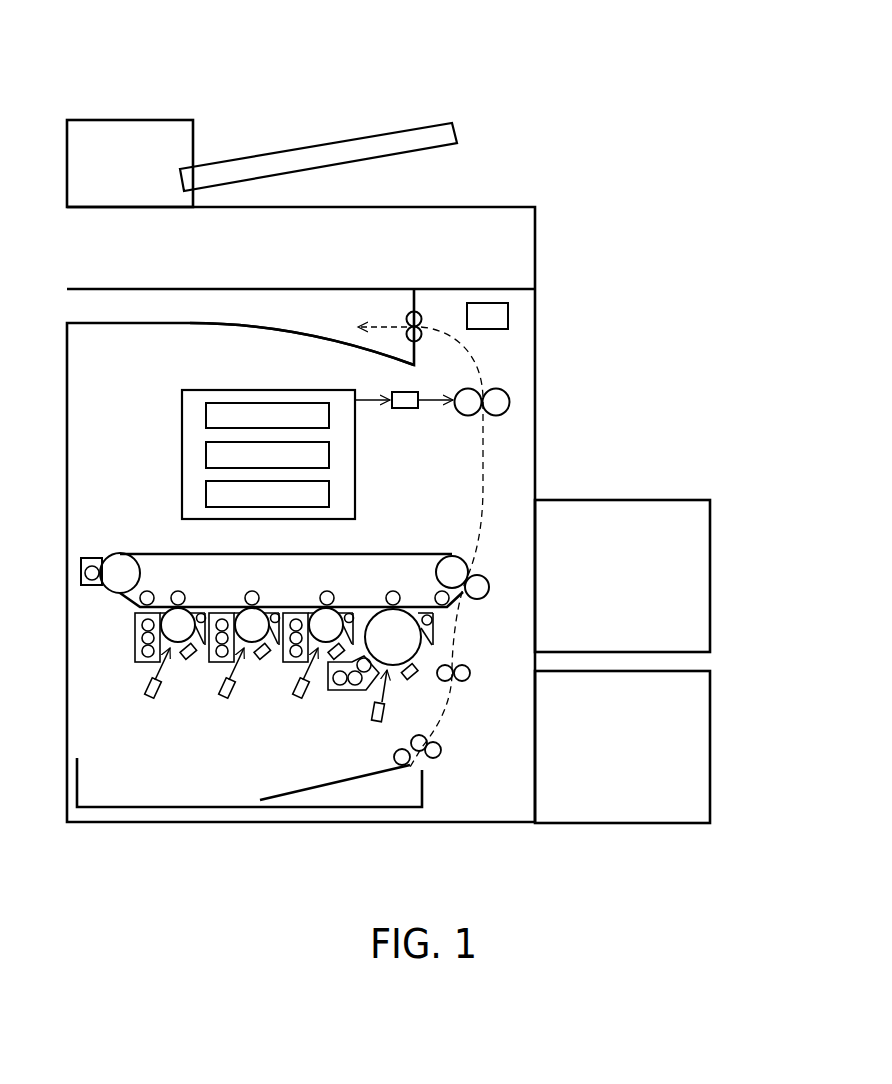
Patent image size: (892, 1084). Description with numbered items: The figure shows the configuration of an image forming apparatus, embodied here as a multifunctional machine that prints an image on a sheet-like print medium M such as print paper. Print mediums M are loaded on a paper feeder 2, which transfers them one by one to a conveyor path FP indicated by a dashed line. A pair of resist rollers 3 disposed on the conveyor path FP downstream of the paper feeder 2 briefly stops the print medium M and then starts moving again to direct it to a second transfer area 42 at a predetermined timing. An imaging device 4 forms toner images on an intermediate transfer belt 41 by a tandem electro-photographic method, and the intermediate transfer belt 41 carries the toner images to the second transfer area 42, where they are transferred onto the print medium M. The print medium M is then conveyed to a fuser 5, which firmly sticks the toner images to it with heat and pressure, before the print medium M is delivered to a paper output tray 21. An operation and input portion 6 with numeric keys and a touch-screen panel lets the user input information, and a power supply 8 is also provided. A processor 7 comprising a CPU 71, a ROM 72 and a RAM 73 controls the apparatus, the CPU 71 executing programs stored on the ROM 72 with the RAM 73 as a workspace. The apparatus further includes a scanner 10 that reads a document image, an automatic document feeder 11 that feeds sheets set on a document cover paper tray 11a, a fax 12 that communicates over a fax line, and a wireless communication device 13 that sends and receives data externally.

The scanner 10 is at (495, 207).
The automatic document feeder 11 is at (130, 120).
The document cover paper tray 11a is at (342, 138).
The paper output tray 21 is at (260, 325).
The operation and input portion 6 is at (488, 303).
The fuser 5 is at (504, 377).
The power supply 8 is at (405, 392).
The processor 7 is at (236, 433).
The CPU 71 is at (206, 416).
The ROM 72 is at (206, 455).
The RAM 73 is at (206, 493).
The imaging device 4 is at (302, 598).
The intermediate transfer belt 41 is at (388, 554).
The second transfer area 42 is at (489, 561).
The pair of resist rollers 3 is at (474, 663).
The conveyor path FP is at (445, 712).
The paper feeder 2 is at (439, 780).
The print medium M is at (318, 785).
The fax 12 is at (710, 543).
The wireless communication device 13 is at (710, 712).